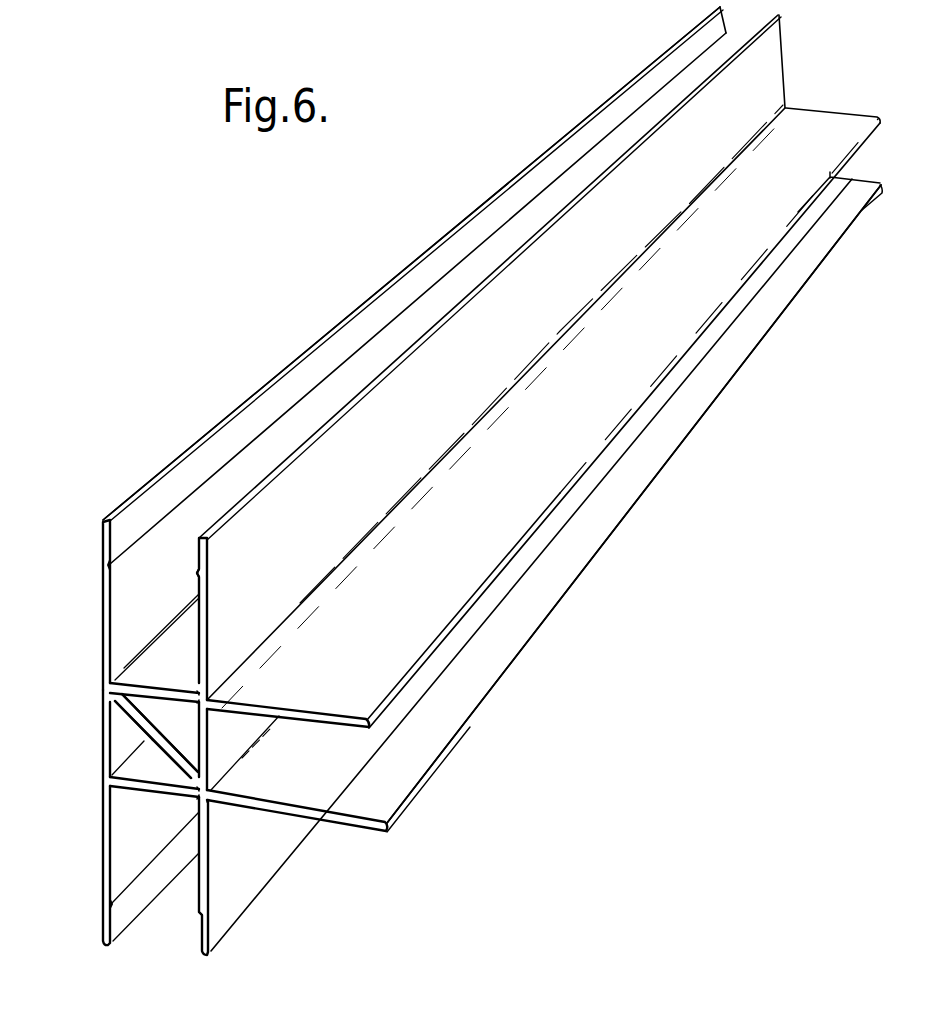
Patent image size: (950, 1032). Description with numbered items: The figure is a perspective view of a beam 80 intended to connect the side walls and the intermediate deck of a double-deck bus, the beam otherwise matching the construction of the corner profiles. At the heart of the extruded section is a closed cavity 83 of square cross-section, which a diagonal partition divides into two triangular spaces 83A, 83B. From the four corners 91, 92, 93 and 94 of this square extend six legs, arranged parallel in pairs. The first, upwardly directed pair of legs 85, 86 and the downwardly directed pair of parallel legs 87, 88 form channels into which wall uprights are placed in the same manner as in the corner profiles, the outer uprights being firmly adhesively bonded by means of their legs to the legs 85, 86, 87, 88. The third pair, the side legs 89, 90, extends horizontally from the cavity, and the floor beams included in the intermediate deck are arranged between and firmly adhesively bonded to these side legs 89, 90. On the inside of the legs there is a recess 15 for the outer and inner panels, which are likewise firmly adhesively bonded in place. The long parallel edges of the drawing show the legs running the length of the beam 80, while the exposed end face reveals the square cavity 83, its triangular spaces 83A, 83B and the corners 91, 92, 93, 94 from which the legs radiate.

The beam 80 is at (248, 372).
The leg 85 is at (102, 583).
The leg 86 is at (206, 598).
The leg 87 is at (110, 832).
The leg 88 is at (208, 868).
The side leg 89 is at (311, 812).
The side leg 90 is at (299, 712).
The corner of the square 91 is at (111, 691).
The corner of the square 92 is at (214, 696).
The corner of the square 93 is at (208, 798).
The corner of the square 94 is at (112, 780).
The closed cavity 83 is at (130, 731).
The triangular space 83A is at (127, 718).
The triangular space 83B is at (130, 760).
The recess 15 is at (198, 556).